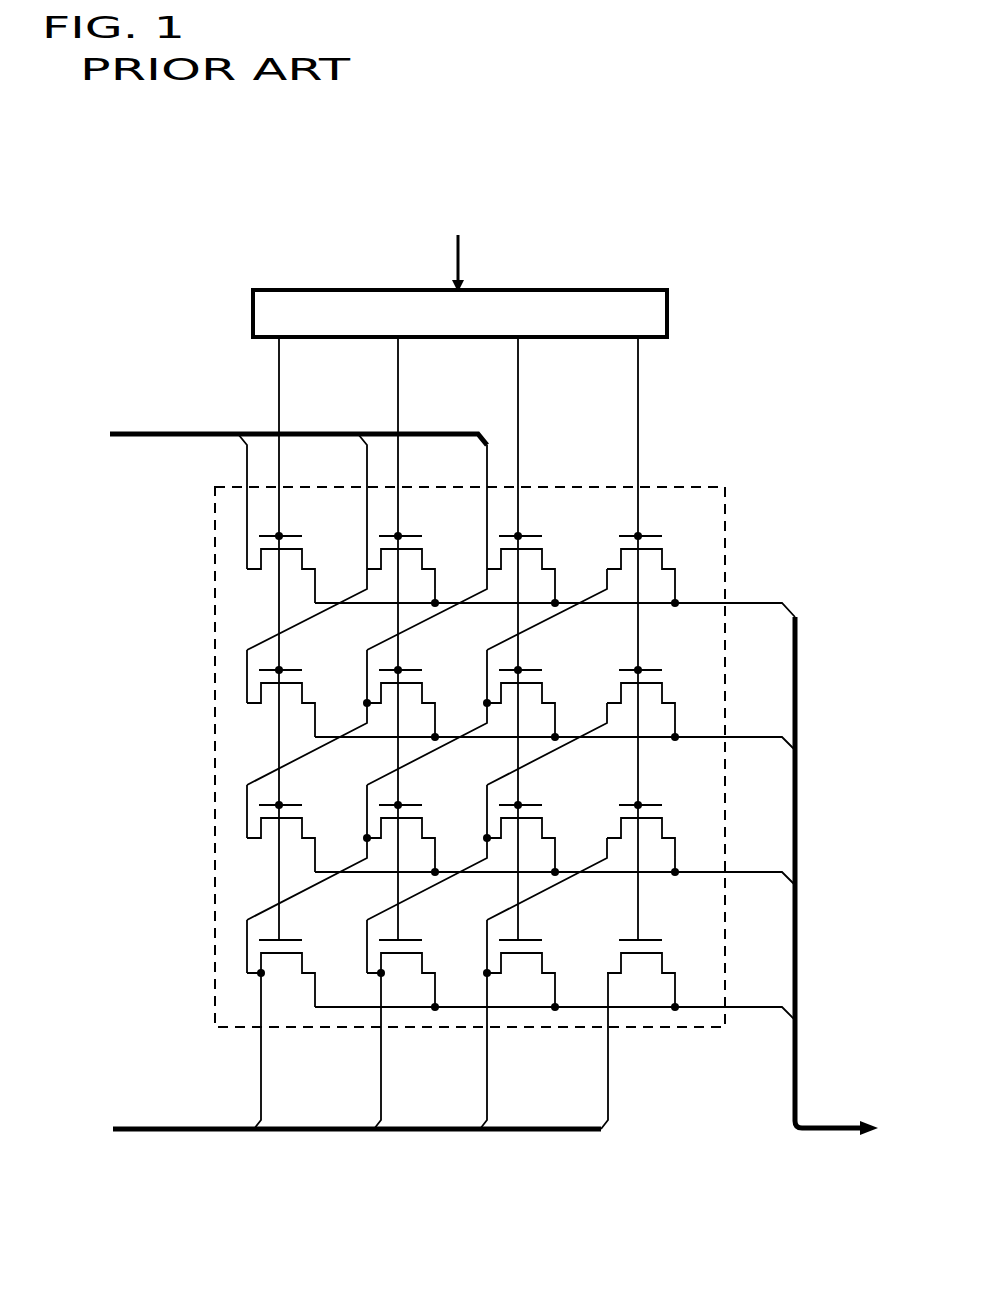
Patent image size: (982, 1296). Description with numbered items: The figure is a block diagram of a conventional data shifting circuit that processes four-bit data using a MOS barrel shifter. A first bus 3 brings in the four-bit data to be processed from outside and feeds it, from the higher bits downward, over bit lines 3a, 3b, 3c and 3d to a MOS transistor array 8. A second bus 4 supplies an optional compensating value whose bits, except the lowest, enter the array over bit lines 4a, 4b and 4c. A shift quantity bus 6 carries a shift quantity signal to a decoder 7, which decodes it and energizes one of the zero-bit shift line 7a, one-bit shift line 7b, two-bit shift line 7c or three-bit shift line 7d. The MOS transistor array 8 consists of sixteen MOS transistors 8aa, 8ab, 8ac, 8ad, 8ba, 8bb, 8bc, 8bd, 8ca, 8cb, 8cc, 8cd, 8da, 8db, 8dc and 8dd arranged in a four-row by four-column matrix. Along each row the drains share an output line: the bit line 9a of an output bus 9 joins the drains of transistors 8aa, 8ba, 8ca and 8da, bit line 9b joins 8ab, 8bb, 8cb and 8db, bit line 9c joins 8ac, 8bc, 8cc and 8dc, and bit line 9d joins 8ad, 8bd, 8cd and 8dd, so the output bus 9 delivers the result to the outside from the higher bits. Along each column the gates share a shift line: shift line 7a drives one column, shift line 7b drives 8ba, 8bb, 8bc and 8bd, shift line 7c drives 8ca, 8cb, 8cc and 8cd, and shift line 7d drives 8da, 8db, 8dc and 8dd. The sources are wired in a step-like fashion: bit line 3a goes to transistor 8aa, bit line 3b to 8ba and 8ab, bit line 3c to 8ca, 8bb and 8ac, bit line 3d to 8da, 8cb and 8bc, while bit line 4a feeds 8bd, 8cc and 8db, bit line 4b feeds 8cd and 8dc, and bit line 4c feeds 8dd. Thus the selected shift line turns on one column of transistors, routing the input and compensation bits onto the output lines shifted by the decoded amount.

The first bus 3 is at (155, 1126).
The bit line 3a is at (609, 1073).
The bit line 3b is at (488, 1073).
The bit line 3c is at (382, 1073).
The bit line 3d is at (262, 1073).
The second bus 4 is at (145, 431).
The bit line 4a is at (487, 465).
The bit line 4b is at (367, 465).
The bit line 4c is at (247, 465).
The shift quantity bus 6 is at (466, 262).
The decoder 7 is at (253, 312).
The 0-bit shift line 7a is at (638, 388).
The 1-bit shift line 7b is at (518, 388).
The 2-bit shift line 7c is at (398, 388).
The 3-bit shift line 7d is at (279, 388).
The MOS transistor array 8 is at (704, 484).
The MOS transistor 8aa is at (662, 961).
The MOS transistor 8ab is at (662, 826).
The MOS transistor 8ac is at (662, 691).
The MOS transistor 8ad is at (662, 557).
The MOS transistor 8ba is at (542, 961).
The MOS transistor 8bb is at (542, 826).
The MOS transistor 8bc is at (542, 691).
The MOS transistor 8bd is at (542, 557).
The MOS transistor 8ca is at (422, 961).
The MOS transistor 8cb is at (422, 826).
The MOS transistor 8cc is at (422, 691).
The MOS transistor 8cd is at (422, 557).
The MOS transistor 8da is at (302, 961).
The MOS transistor 8db is at (302, 826).
The MOS transistor 8dc is at (302, 691).
The MOS transistor 8dd is at (302, 557).
The output bus 9 is at (838, 1125).
The bit line 9a is at (757, 1002).
The bit line 9b is at (757, 867).
The bit line 9c is at (757, 732).
The bit line 9d is at (757, 598).